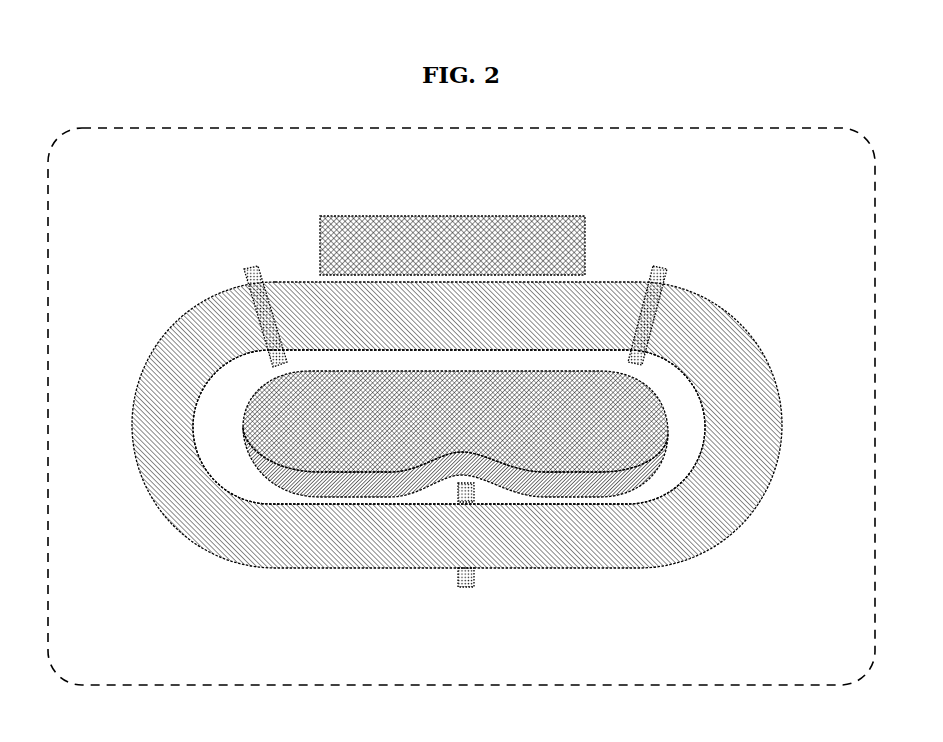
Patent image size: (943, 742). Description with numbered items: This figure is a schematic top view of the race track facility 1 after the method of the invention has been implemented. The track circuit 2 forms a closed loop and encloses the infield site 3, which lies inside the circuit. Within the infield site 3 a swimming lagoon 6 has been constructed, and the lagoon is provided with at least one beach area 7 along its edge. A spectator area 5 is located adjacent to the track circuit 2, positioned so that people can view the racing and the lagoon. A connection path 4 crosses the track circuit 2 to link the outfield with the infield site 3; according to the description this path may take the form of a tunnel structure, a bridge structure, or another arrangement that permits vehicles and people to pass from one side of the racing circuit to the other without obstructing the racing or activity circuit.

The race track facility 1 is at (461, 406).
The track circuit 2 is at (753, 396).
The infield site 3 is at (686, 426).
The connection path 4 is at (239, 274).
The spectator area 5 is at (464, 237).
The swimming lagoon 6 is at (529, 409).
The beach area 7 is at (284, 481).